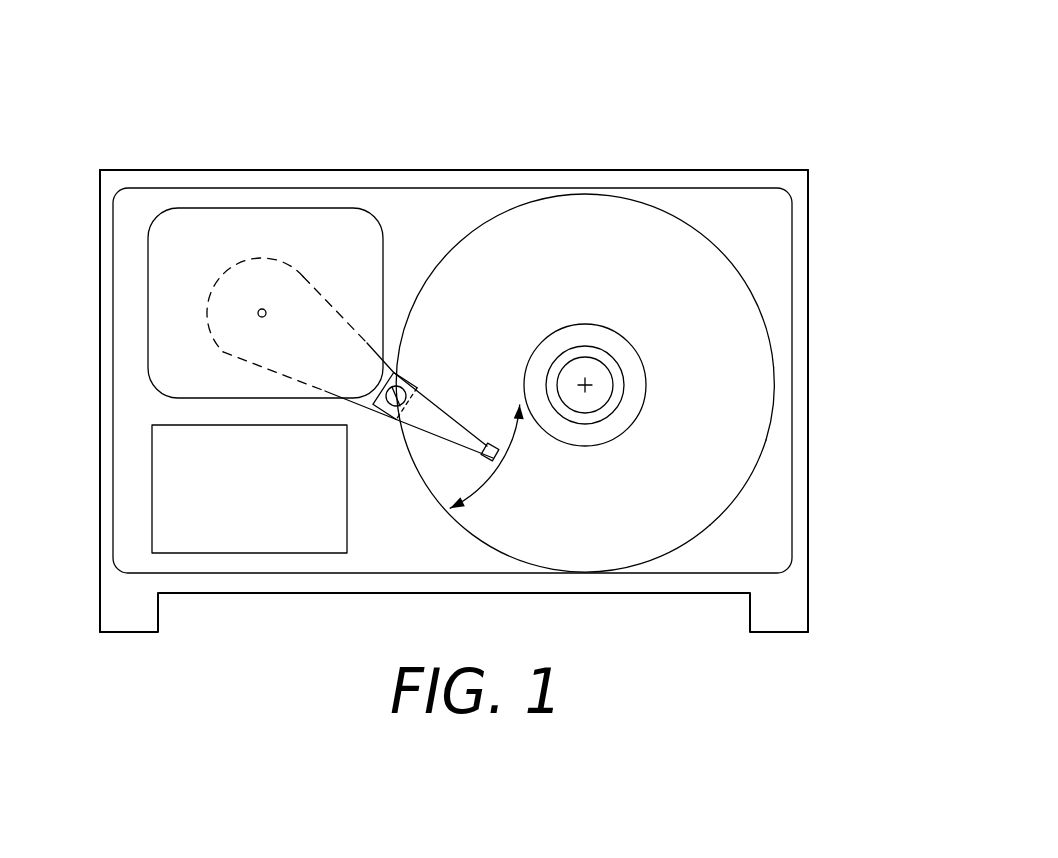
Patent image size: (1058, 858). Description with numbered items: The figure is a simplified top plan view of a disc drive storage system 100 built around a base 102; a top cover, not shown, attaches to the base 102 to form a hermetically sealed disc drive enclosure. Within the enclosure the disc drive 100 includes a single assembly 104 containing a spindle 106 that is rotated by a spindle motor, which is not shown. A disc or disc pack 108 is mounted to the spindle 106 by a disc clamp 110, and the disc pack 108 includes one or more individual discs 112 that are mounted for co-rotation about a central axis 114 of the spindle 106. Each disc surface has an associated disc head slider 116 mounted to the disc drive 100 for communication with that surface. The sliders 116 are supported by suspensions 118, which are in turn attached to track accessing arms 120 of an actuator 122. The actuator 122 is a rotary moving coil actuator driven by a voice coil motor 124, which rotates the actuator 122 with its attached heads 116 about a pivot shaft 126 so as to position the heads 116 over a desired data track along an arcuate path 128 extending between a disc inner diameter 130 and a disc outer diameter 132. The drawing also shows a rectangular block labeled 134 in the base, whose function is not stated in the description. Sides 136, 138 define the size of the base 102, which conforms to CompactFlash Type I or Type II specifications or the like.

The disc drive storage system 100 is at (672, 110).
The base 102 is at (810, 247).
The single assembly 104 is at (608, 330).
The spindle 106 is at (570, 373).
The disc pack 108 is at (760, 390).
The disc clamp 110 is at (620, 365).
The individual discs 112 is at (560, 202).
The central axis 114 is at (590, 390).
The disc head slider 116 is at (497, 460).
The suspensions 118 is at (443, 411).
The track accessing arms 120 is at (368, 403).
The actuator 122 is at (230, 279).
The voice coil motor 124 is at (230, 220).
The pivot shaft 126 is at (268, 308).
The arcuate path 128 is at (473, 480).
The disc inner diameter 130 is at (612, 432).
The disc outer diameter 132 is at (698, 535).
The circuit board / electronics 134 is at (170, 462).
The side 136 is at (808, 487).
The side 138 is at (100, 382).